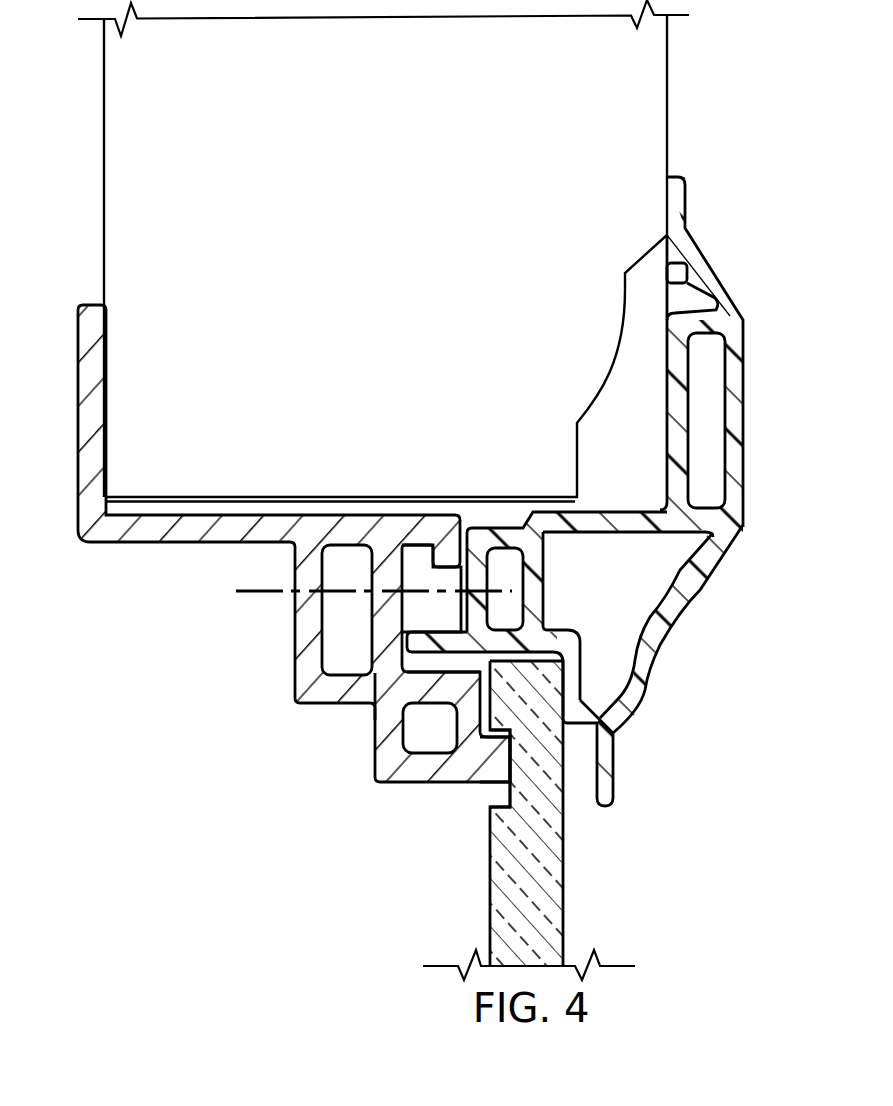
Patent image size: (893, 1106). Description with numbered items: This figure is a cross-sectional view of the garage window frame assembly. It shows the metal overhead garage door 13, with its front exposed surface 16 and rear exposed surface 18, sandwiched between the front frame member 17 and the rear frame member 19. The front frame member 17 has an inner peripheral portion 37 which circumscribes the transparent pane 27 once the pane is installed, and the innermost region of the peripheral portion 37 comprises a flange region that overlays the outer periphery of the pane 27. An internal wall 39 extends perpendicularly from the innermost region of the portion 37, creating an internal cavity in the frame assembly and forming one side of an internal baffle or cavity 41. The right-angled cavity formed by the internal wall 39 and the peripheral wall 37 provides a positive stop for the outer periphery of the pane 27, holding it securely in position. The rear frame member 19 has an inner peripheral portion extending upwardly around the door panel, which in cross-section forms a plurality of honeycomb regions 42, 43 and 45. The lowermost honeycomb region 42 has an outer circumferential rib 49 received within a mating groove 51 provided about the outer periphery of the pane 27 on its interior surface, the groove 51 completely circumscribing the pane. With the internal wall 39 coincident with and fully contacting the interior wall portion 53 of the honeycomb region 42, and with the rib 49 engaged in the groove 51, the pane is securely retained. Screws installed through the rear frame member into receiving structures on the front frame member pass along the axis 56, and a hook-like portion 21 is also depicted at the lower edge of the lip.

The overhead garage door 13 is at (112, 170).
The front exposed surface 16 is at (668, 80).
The front frame member 17 is at (748, 508).
The rear exposed surface 18 is at (103, 88).
The rear frame member 19 is at (78, 397).
The hook 21 is at (590, 782).
The transparent pane 27 is at (565, 873).
The inner peripheral portion 37 is at (645, 690).
The internal wall 39 is at (422, 638).
The internal baffle or cavity 41 is at (603, 532).
The honeycomb region 42 is at (378, 713).
The honeycomb region 43 is at (433, 540).
The honeycomb region 45 is at (347, 540).
The outer circumferential rib 49 is at (490, 807).
The groove 51 is at (495, 740).
The interior wall portion 53 is at (410, 780).
The axis 56 is at (257, 595).